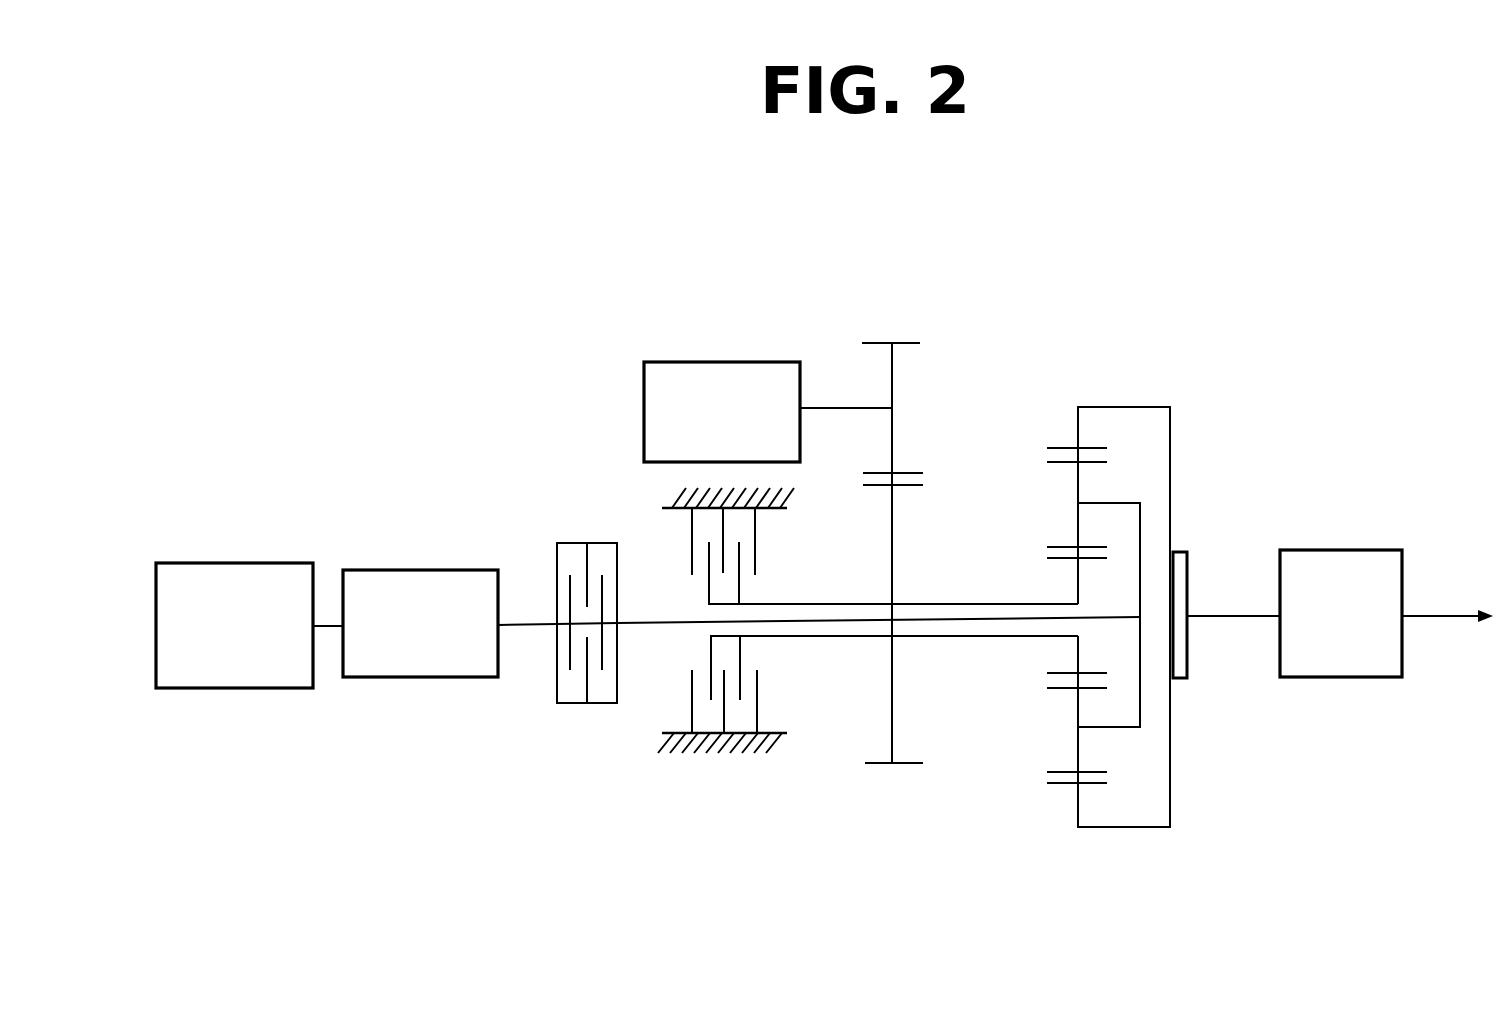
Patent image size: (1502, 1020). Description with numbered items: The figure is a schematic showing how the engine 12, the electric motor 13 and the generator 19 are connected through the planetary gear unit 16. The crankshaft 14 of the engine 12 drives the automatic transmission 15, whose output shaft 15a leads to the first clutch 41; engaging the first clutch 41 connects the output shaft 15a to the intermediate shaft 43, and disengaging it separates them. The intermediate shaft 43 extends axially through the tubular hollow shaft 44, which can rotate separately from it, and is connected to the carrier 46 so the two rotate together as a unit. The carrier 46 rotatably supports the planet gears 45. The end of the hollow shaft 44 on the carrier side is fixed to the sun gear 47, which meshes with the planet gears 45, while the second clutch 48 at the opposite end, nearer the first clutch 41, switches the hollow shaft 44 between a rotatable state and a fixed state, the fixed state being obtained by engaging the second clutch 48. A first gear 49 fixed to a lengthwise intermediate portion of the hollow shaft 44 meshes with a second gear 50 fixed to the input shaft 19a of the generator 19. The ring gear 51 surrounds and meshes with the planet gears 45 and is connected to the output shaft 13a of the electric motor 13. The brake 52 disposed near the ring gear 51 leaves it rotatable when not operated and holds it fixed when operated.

The engine 12 is at (235, 689).
The electric motor 13 is at (1340, 678).
The output shaft 13a is at (1227, 614).
The crankshaft 14 is at (329, 627).
The automatic transmission 15 is at (433, 677).
The output shaft 15a is at (524, 625).
The planetary gear unit 16 is at (1033, 361).
The generator 19 is at (725, 362).
The input shaft 19a is at (830, 408).
The first clutch 41 is at (583, 703).
The intermediate shaft 43 is at (652, 625).
The hollow shaft 44 is at (970, 637).
The planet gears 45 is at (1077, 530).
The carrier 46 is at (1132, 728).
The sun gear 47 is at (1077, 590).
The second clutch 48 is at (726, 772).
The first gear 49 is at (893, 545).
The second gear 50 is at (893, 375).
The ring gear 51 is at (1077, 430).
The brake 52 is at (1182, 682).